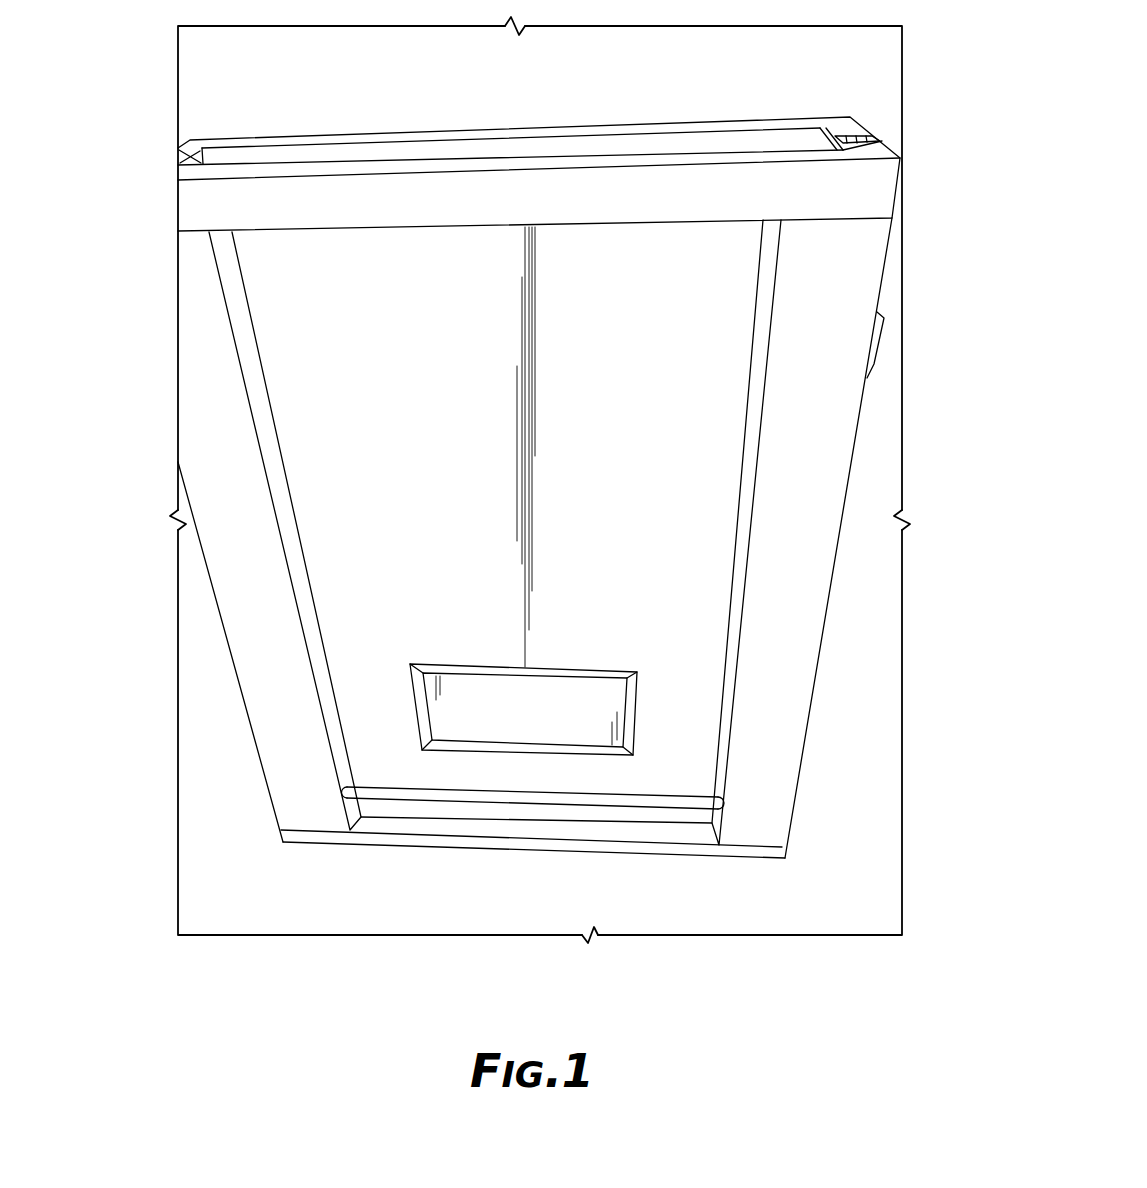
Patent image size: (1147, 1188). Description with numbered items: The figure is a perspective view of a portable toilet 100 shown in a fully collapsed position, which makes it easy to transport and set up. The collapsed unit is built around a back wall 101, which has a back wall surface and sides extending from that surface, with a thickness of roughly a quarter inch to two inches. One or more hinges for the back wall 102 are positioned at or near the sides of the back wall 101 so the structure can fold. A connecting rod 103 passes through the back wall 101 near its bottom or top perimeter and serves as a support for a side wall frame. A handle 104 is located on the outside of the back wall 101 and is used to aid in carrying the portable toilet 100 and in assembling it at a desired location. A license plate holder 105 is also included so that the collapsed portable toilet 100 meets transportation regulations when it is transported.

The portable toilet 100 is at (164, 120).
The back wall 101 is at (203, 357).
The hinges for the back wall 102 is at (866, 134).
The connecting rod 103 is at (392, 788).
The handle 104 is at (878, 343).
The license plate holder 105 is at (637, 710).